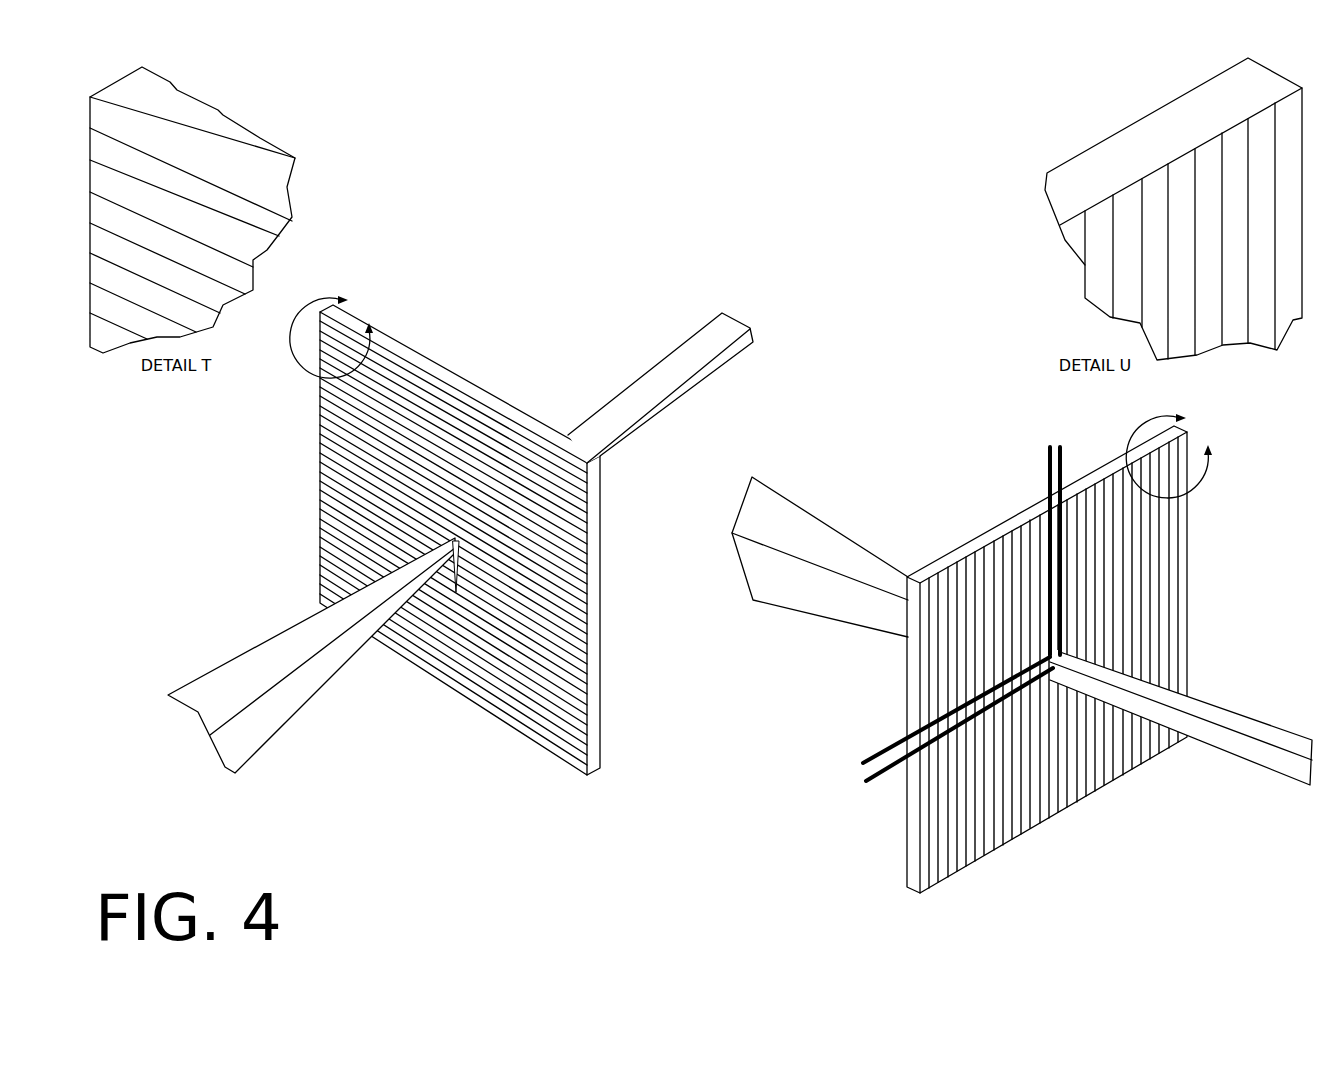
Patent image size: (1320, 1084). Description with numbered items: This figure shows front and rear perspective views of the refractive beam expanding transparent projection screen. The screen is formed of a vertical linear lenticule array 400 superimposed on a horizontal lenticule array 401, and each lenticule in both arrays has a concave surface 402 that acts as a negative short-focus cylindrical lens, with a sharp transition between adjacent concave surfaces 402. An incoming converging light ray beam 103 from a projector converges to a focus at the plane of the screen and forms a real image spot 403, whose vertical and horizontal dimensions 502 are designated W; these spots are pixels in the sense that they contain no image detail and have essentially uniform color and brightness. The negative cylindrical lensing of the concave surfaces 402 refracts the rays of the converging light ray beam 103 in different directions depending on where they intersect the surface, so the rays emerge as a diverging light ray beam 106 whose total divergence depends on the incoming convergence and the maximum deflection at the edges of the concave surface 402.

The converging light ray beam 103 is at (719, 330).
The diverging light ray beam 106 is at (730, 624).
The vertical linear lenticule array 400 is at (1150, 590).
The horizontal lenticule array 401 is at (345, 500).
The concave surface 402 is at (257, 207).
The real image spot 403 is at (1050, 657).
The vertical and horizontal dimensions 502 is at (1047, 437).